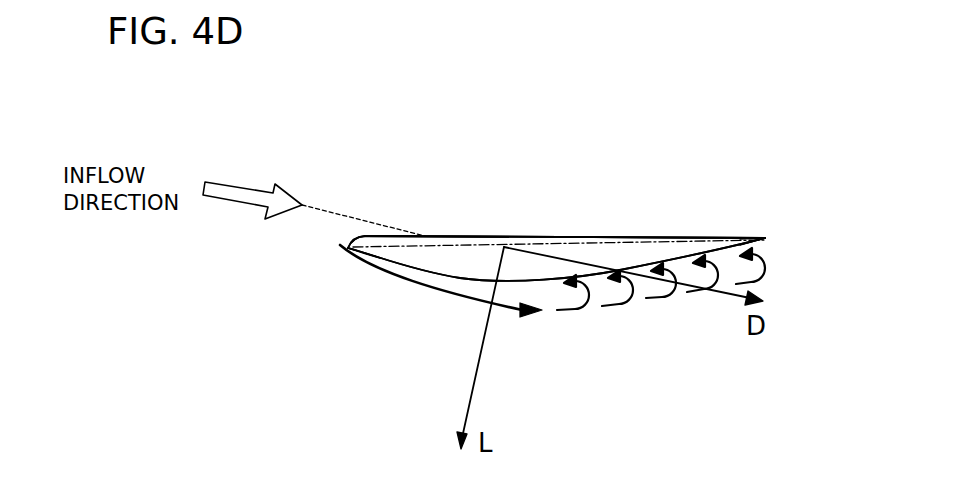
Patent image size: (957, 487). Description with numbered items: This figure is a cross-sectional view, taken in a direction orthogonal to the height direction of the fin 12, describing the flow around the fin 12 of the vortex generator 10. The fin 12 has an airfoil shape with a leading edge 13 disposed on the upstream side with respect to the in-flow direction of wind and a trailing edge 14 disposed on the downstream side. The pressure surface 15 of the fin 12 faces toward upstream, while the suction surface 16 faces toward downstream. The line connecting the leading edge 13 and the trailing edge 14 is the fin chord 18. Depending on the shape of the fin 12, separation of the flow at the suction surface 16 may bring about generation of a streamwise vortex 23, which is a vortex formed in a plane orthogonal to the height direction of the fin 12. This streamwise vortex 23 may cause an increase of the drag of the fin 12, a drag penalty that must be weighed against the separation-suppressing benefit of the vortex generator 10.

The vortex generator 10 is at (709, 166).
The fin 12 is at (630, 237).
The leading edge 13 is at (347, 251).
The trailing edge 14 is at (764, 243).
The pressure surface 15 is at (530, 236).
The suction surface 16 is at (446, 282).
The fin chord 18 is at (412, 248).
The streamwise vortex 23 is at (619, 308).